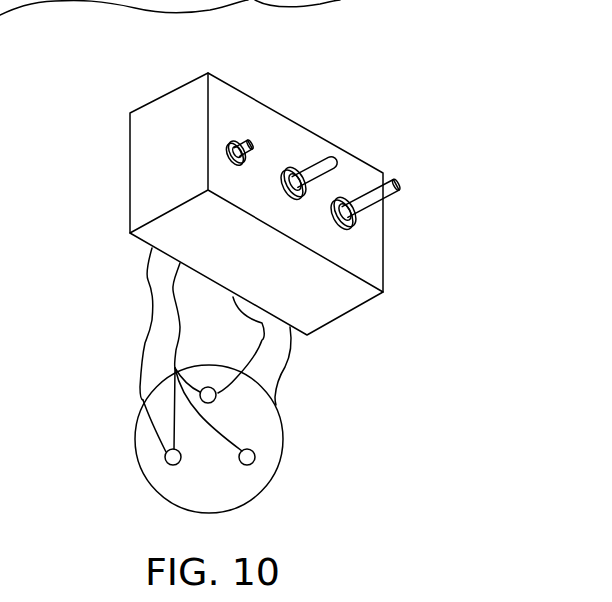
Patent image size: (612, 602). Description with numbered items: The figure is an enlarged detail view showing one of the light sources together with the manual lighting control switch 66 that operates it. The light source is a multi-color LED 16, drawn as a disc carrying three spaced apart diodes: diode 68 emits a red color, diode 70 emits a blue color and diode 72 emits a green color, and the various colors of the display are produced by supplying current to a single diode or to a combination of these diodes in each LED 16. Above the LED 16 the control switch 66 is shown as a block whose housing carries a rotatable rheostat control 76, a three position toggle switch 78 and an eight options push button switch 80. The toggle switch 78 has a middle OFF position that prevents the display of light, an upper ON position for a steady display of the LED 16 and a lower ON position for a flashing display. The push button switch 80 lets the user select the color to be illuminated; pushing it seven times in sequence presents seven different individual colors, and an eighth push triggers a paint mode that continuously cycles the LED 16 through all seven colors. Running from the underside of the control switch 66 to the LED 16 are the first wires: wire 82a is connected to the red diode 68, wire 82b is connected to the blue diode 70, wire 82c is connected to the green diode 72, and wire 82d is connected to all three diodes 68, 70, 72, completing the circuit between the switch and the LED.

The multi-color LED 16 is at (292, 419).
The manual lighting control switch 66 is at (383, 235).
The diode 68 is at (209, 387).
The diode 70 is at (165, 457).
The diode 72 is at (254, 460).
The rotatable rheostat control 76 is at (405, 177).
The 3 position toggle switch 78 is at (342, 153).
The push button switch 80 is at (258, 131).
The wire 82a is at (234, 296).
The wire 82b is at (148, 347).
The wire 82c is at (283, 366).
The wire 82d is at (148, 293).